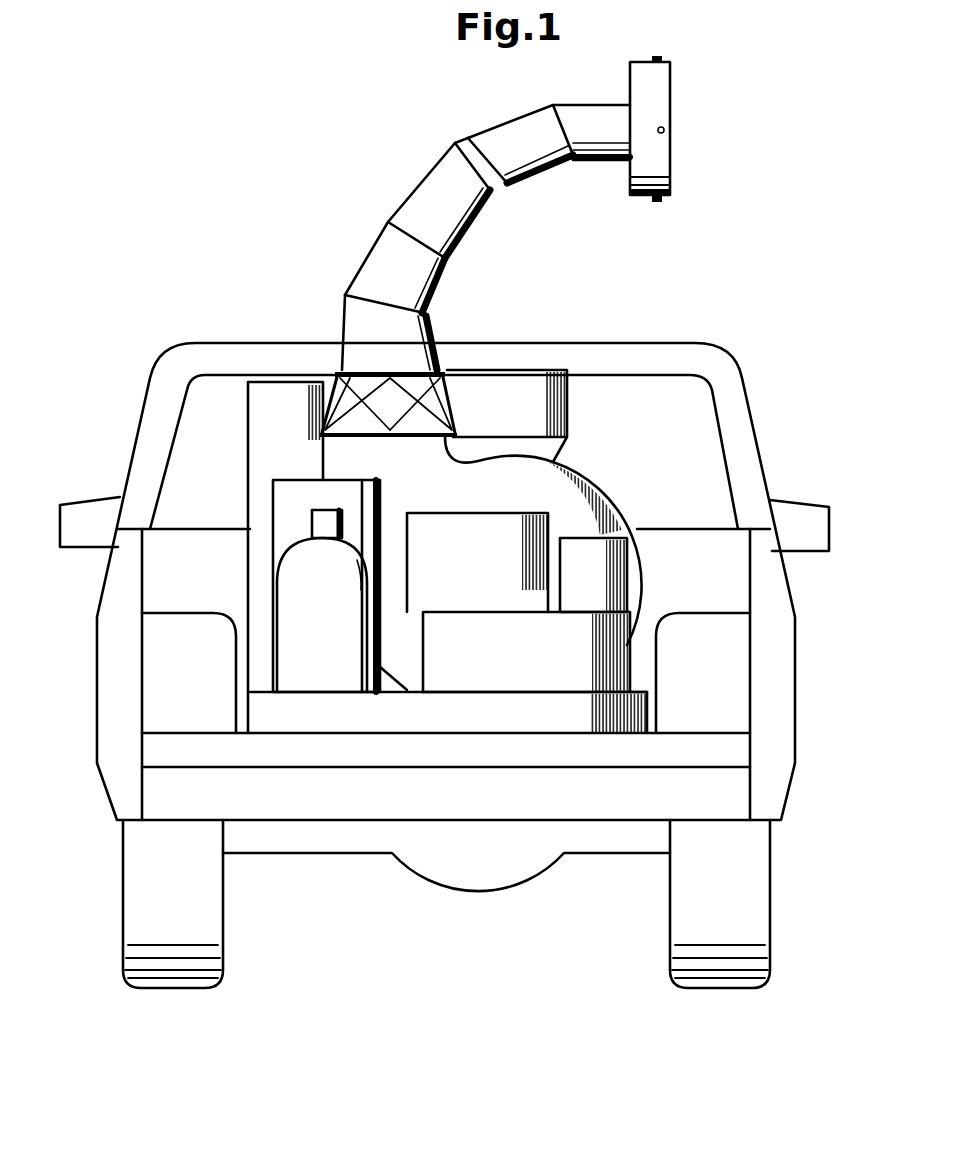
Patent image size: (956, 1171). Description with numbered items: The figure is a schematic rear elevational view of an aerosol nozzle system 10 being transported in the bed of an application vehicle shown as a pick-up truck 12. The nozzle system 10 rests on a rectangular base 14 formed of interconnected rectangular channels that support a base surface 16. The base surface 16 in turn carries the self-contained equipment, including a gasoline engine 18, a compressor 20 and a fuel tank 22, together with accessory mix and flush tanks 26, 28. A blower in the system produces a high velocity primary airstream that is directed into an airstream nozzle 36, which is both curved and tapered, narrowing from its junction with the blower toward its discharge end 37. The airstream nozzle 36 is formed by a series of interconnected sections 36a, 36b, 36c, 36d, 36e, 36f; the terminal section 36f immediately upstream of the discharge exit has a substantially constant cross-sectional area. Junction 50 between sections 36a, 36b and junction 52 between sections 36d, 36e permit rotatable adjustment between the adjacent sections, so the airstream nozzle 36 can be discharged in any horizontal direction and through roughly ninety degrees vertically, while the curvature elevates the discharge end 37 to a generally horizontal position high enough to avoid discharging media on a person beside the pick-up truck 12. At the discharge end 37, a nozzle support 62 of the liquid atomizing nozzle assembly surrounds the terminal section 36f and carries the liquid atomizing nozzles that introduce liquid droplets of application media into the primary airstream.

The aerosol nozzle system 10 is at (623, 492).
The pick-up truck 12 is at (633, 343).
The rectangular base 14 is at (418, 725).
The base surface 16 is at (459, 684).
The gasoline engine 18 is at (481, 561).
The compressor 20 is at (598, 578).
The fuel tank 22 is at (545, 661).
The mix tank 26 is at (306, 510).
The flush tank 28 is at (330, 593).
The airstream nozzle 36 is at (475, 271).
The airstream nozzle section 36a is at (414, 430).
The airstream nozzle section 36b is at (397, 351).
The airstream nozzle section 36c is at (412, 289).
The airstream nozzle section 36d is at (463, 225).
The airstream nozzle section 36e is at (544, 155).
The terminal airstream nozzle section 36f is at (616, 136).
The discharge end 37 is at (686, 110).
The rotatable junction 50 is at (452, 378).
The rotatable junction 52 is at (462, 146).
The nozzle support 62 is at (660, 162).